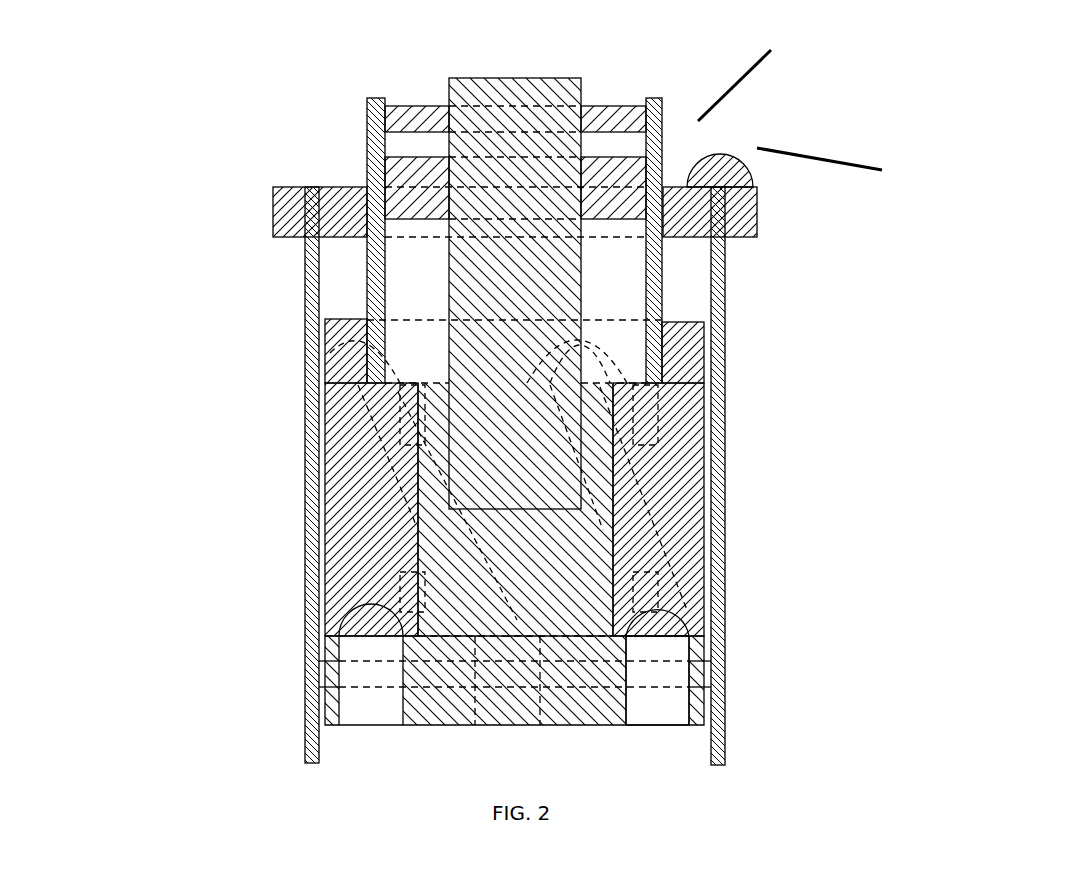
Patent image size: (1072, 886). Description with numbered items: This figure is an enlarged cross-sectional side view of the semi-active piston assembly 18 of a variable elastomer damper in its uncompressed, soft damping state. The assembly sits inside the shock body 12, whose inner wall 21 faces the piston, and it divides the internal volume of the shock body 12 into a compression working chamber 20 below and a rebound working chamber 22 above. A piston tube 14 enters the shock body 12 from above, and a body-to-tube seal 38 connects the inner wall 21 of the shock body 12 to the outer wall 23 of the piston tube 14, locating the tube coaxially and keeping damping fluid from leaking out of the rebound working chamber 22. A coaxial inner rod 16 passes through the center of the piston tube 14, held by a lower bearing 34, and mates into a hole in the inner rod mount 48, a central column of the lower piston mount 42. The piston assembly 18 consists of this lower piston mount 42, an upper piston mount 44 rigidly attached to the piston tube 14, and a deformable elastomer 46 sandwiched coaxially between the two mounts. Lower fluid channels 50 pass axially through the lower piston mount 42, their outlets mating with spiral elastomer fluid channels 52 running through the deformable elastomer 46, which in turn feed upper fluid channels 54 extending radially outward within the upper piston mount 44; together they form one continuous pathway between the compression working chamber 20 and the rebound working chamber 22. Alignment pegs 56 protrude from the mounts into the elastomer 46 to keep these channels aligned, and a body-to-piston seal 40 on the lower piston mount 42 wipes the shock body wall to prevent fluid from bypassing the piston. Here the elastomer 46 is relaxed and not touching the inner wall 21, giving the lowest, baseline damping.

The shock body 12 is at (318, 683).
The piston tube 14 is at (650, 309).
The inner rod 16 is at (480, 283).
The semi-active piston assembly 18 is at (886, 488).
The compression working chamber 20 is at (404, 746).
The inner wall of the shock body 21 is at (836, 169).
The rebound working chamber 22 is at (698, 272).
The outer wall of the piston tube 23 is at (753, 76).
The lower bearing 34 is at (421, 175).
The body-to-tube seal 38 is at (702, 206).
The body-to-piston seal 40 is at (702, 672).
The lower piston mount 42 is at (578, 707).
The upper piston mount 44 is at (676, 352).
The deformable elastomer 46 is at (375, 527).
The inner rod mount 48 is at (542, 543).
The lower fluid channels 50 is at (650, 720).
The elastomer fluid channels 52 is at (643, 527).
The upper fluid channels 54 is at (340, 360).
The alignment pegs 56 is at (643, 418).